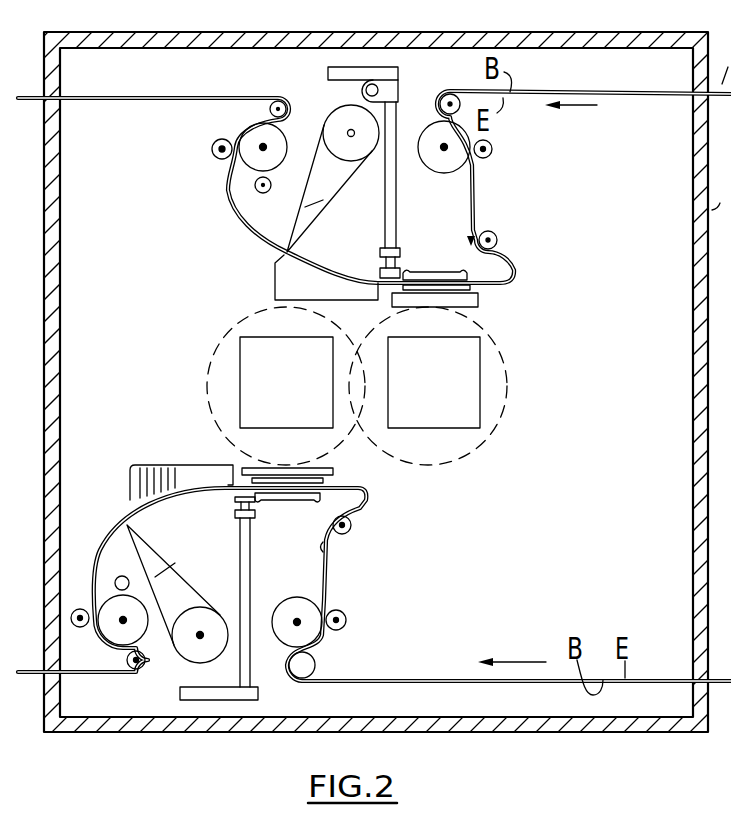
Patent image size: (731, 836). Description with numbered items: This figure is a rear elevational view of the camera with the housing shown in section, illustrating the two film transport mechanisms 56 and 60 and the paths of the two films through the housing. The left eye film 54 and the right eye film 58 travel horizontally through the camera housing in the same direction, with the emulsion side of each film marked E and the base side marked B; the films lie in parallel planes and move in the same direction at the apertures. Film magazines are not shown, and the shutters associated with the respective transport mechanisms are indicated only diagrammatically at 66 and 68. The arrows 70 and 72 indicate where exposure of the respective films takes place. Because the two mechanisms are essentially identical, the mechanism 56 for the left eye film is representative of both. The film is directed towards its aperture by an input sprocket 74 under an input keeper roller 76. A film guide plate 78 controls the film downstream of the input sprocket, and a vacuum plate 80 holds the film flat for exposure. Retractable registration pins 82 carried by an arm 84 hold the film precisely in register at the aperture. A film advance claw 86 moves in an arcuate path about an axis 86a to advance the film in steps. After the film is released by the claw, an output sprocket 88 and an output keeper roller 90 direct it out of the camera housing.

The left eye film 54 is at (458, 678).
The film transport mechanism 56 is at (137, 440).
The right eye film 58 is at (633, 92).
The film transport mechanism 60 is at (248, 253).
The shutter 66 is at (333, 470).
The shutter 68 is at (475, 308).
The arrow 70 is at (287, 378).
The arrow 72 is at (433, 350).
The input sprocket 74 is at (310, 633).
The input keeper roller 76 is at (356, 581).
The film guide plate 78 is at (352, 552).
The vacuum plate 80 is at (298, 498).
The retractable registration pins 82 is at (228, 490).
The arm 84 is at (238, 572).
The film advance claw 86 is at (175, 574).
The axis 86a is at (197, 635).
The output sprocket 88 is at (117, 633).
The output keeper roller 90 is at (76, 590).